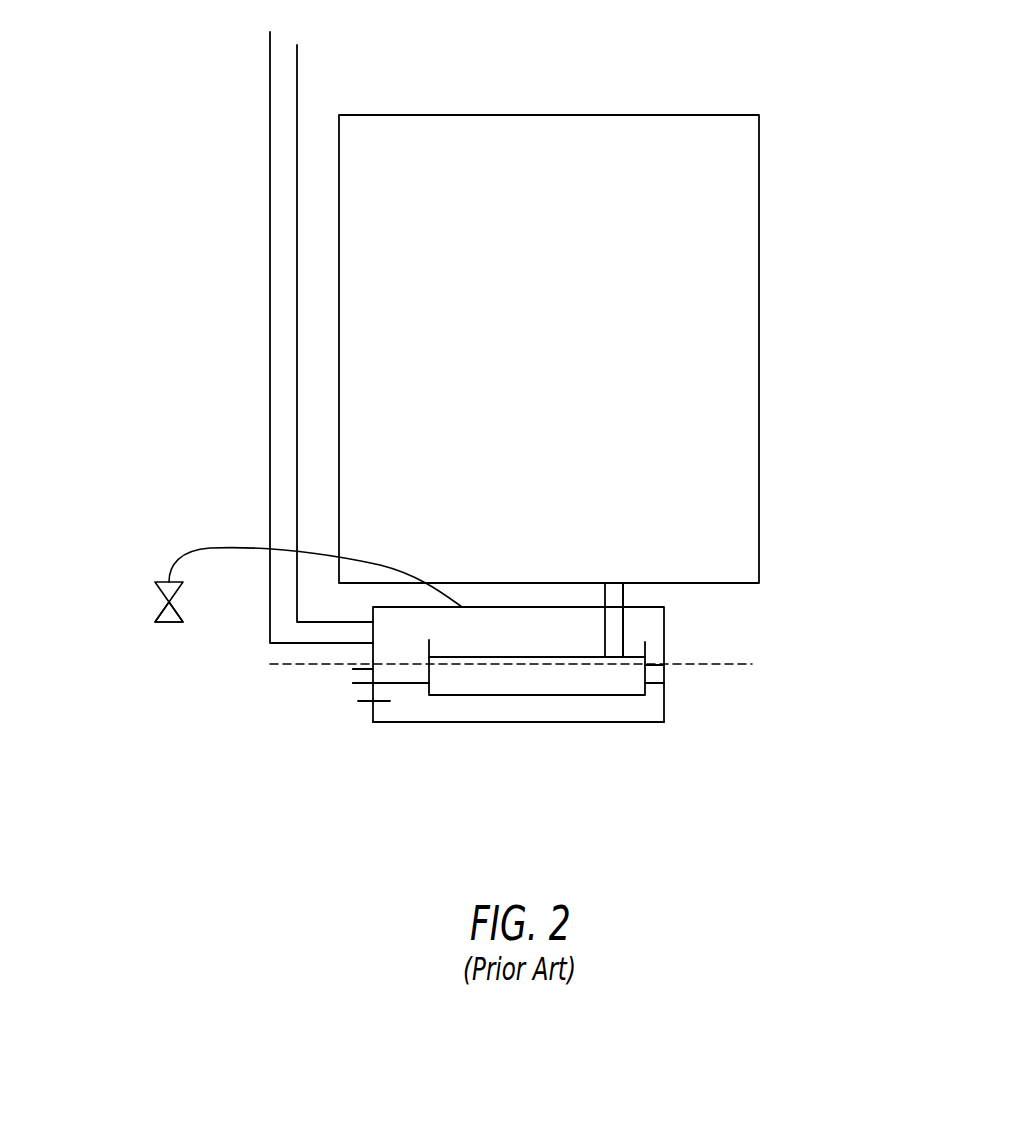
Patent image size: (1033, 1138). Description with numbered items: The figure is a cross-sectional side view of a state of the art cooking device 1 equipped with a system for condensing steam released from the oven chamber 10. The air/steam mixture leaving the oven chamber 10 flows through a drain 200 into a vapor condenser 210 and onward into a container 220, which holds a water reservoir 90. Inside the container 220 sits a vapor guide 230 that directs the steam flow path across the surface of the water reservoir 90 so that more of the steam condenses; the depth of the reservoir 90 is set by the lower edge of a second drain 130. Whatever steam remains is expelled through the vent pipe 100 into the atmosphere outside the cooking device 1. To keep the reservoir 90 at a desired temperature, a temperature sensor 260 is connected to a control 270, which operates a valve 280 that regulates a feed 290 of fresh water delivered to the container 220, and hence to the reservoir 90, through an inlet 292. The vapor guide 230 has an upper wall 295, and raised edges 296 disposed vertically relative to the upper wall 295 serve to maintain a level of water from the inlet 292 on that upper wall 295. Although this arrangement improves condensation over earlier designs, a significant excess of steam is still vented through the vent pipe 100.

The cooking device 1 is at (704, 81).
The oven chamber 10 is at (570, 272).
The water reservoir 90 is at (463, 704).
The vent pipe 100 is at (270, 255).
The drain 130 is at (352, 677).
The drain 200 is at (615, 583).
The vapor condenser 210 is at (627, 622).
The container 220 is at (664, 700).
The vapor guide 230 is at (555, 675).
The temperature sensor 260 is at (383, 708).
The control 270 is at (363, 705).
The valve 280 is at (150, 565).
The feed 290 is at (158, 637).
The inlet 292 is at (470, 630).
The upper wall 295 is at (508, 657).
The raised edges 296 is at (428, 656).